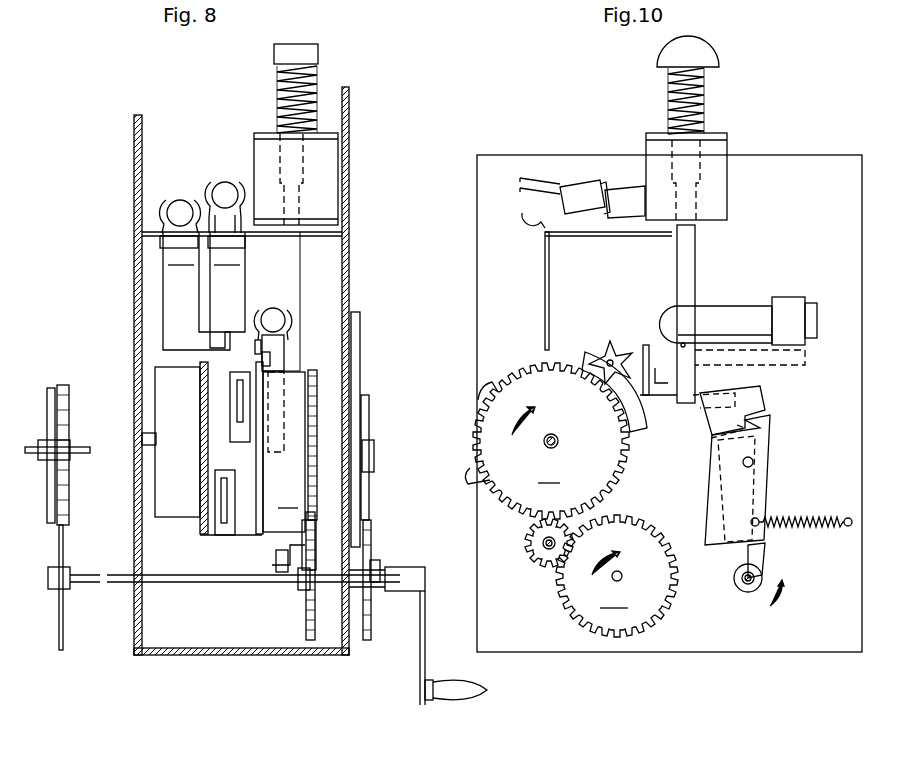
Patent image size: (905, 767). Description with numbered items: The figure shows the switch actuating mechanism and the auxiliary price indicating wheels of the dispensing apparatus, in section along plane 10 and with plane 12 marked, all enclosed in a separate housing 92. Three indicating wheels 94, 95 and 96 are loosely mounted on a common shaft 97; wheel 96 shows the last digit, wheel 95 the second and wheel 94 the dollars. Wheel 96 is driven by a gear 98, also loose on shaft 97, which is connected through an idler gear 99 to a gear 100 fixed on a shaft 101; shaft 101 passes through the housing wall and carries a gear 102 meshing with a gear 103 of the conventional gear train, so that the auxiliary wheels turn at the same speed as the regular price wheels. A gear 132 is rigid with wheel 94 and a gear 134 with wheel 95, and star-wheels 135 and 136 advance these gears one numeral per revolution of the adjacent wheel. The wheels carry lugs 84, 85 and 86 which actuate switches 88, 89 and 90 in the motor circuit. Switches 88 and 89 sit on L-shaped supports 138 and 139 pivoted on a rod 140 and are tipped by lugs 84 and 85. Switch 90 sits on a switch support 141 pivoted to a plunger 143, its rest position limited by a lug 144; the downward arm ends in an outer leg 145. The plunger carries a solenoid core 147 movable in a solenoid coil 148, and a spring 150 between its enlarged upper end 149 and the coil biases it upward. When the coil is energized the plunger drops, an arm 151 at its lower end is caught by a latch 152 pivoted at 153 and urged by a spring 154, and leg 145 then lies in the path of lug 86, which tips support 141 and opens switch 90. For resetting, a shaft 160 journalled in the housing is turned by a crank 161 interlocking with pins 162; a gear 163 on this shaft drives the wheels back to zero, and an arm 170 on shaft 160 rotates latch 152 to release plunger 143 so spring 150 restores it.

In FIG. 8, the section line 10 is at (338, 80).
In FIG. 8, the section line 12 is at (70, 715).
In FIG. 8, the lug 84 is at (222, 522).
In FIG. 8, the lug 85 is at (240, 388).
In FIG. 10, the lug 85 is at (480, 384).
In FIG. 8, the lug 86 is at (290, 386).
In FIG. 10, the lug 86 is at (636, 428).
In FIG. 8, the switch 88 is at (180, 210).
In FIG. 10, the switch 88 is at (538, 220).
In FIG. 8, the switch 89 is at (225, 192).
In FIG. 10, the switch 89 is at (627, 200).
In FIG. 8, the switch 90 is at (273, 308).
In FIG. 10, the switch 90 is at (730, 318).
In FIG. 8, the housing 92 is at (347, 226).
In FIG. 10, the housing 92 is at (806, 632).
In FIG. 8, the indicating wheel 94 is at (175, 505).
In FIG. 8, the indicating wheel 95 is at (230, 513).
In FIG. 8, the indicating wheel 96 is at (284, 468).
In FIG. 8, the shaft 97 is at (150, 440).
In FIG. 10, the shaft 97 is at (558, 439).
In FIG. 8, the gear 98 is at (315, 380).
In FIG. 10, the gear 98 is at (551, 441).
In FIG. 8, the idler gear 99 is at (314, 520).
In FIG. 10, the idler gear 99 is at (530, 552).
In FIG. 8, the gear 100 is at (306, 612).
In FIG. 10, the gear 100 is at (617, 576).
In FIG. 8, the shaft 101 is at (188, 583).
In FIG. 10, the shaft 101 is at (622, 576).
In FIG. 8, the gear 102 is at (63, 620).
In FIG. 8, the gear 103 is at (66, 400).
In FIG. 8, the gear 132 is at (203, 530).
In FIG. 8, the gear 134 is at (259, 535).
In FIG. 8, the star-wheel 135 is at (266, 358).
In FIG. 8, the star-wheel 136 is at (258, 345).
In FIG. 10, the star-wheel 136 is at (606, 344).
In FIG. 8, the L-shaped support 138 is at (196, 291).
In FIG. 8, the L-shaped support 139 is at (227, 290).
In FIG. 10, the L-shaped support 139 is at (545, 303).
In FIG. 8, the rod 140 is at (332, 236).
In FIG. 10, the rod 140 is at (553, 238).
In FIG. 8, the switch support 141 is at (282, 352).
In FIG. 10, the switch support 141 is at (790, 335).
In FIG. 10, the plunger 143 is at (690, 272).
In FIG. 10, the lug 144 is at (668, 372).
In FIG. 10, the outer leg 145 is at (646, 370).
In FIG. 8, the solenoid core 147 is at (298, 160).
In FIG. 10, the solenoid core 147 is at (690, 160).
In FIG. 8, the solenoid coil 148 is at (320, 158).
In FIG. 10, the solenoid coil 148 is at (718, 155).
In FIG. 8, the enlarged upper end 149 is at (297, 48).
In FIG. 10, the enlarged upper end 149 is at (705, 58).
In FIG. 8, the spring 150 is at (276, 92).
In FIG. 10, the spring 150 is at (668, 101).
In FIG. 10, the arm 151 is at (735, 395).
In FIG. 10, the latch 152 is at (772, 422).
In FIG. 10, the pivot 153 is at (754, 462).
In FIG. 10, the spring 154 is at (810, 520).
In FIG. 8, the shaft 160 is at (372, 588).
In FIG. 10, the shaft 160 is at (735, 582).
In FIG. 8, the crank 161 is at (425, 635).
In FIG. 8, the pins 162 is at (377, 562).
In FIG. 8, the gear 163 is at (371, 543).
In FIG. 8, the arm 170 is at (278, 565).
In FIG. 10, the arm 170 is at (764, 556).